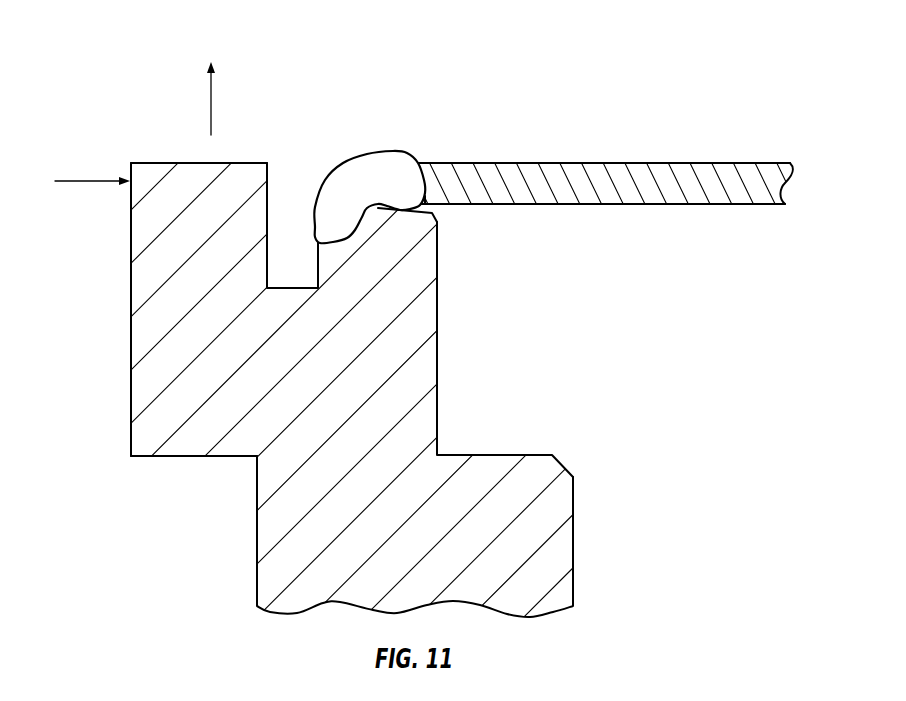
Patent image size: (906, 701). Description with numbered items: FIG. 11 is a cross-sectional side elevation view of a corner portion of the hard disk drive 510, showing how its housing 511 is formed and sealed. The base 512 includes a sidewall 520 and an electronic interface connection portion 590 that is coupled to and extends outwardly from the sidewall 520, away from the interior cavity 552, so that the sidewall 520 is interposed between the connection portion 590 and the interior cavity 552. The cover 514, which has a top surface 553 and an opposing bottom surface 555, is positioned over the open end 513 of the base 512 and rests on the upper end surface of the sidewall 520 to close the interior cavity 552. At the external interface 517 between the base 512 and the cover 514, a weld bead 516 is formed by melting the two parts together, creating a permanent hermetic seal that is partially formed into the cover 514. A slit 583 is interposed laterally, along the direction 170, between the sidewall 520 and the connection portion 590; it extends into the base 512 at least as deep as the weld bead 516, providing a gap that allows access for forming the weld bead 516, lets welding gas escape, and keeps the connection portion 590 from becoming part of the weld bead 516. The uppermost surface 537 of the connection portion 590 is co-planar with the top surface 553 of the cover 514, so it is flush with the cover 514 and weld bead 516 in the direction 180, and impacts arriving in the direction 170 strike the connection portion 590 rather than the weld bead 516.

The hard disk drive 510 is at (773, 79).
The housing 511 is at (613, 171).
The base 512 is at (333, 575).
The open end 513 is at (440, 210).
The cover 514 is at (557, 178).
The weld bead 516 is at (398, 178).
The external interface 517 is at (437, 191).
The sidewall 520 is at (453, 368).
The uppermost surface 537 is at (245, 163).
The interior cavity 552 is at (650, 373).
The top surface 553 is at (738, 163).
The bottom surface 555 is at (640, 204).
The slit 583 is at (295, 203).
The electronic interface connection portion 590 is at (130, 361).
The direction 170 is at (80, 181).
The direction 180 is at (211, 103).